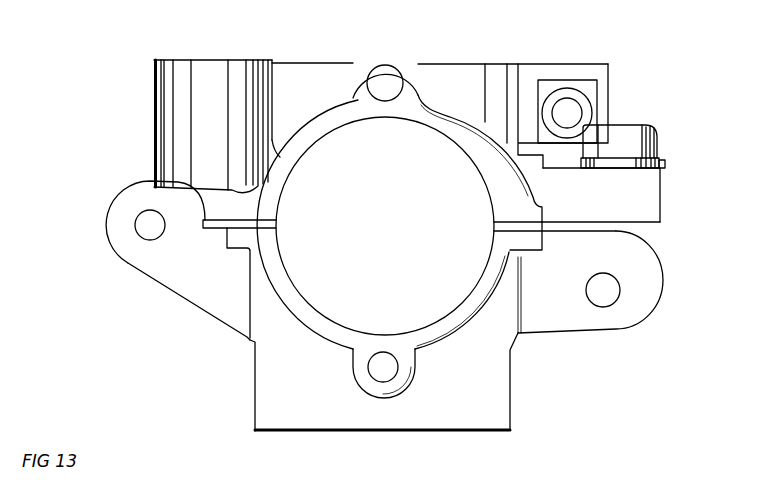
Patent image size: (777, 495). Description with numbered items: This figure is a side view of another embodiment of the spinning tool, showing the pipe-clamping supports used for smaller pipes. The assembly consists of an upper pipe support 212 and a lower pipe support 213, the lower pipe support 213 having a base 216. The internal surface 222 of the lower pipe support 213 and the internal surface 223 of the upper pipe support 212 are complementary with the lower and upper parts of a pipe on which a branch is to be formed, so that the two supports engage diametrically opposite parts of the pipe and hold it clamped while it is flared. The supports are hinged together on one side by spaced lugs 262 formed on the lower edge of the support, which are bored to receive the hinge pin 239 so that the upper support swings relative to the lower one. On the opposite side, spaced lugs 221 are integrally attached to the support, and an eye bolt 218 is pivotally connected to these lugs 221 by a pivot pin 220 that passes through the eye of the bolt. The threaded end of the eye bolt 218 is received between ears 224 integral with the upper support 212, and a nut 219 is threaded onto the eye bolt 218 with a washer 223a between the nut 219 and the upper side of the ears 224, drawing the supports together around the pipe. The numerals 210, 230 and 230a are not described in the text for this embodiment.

The housing 210 is at (213, 318).
The upper pipe support 212 is at (238, 62).
The lower pipe support 213 is at (511, 390).
The base 216 is at (253, 398).
The eye bolt 218 is at (636, 233).
The nut 219 is at (625, 132).
The pivot pin 220 is at (608, 303).
The spaced lugs 221 is at (661, 297).
The internal surface 222 is at (302, 293).
The internal surface 223 is at (313, 145).
The washer 223a is at (665, 163).
The ears 224 is at (661, 200).
The mounting boss 230 is at (563, 82).
The opening 230a is at (578, 112).
The hinge pin 239 is at (138, 238).
The spaced lugs 262 is at (180, 285).